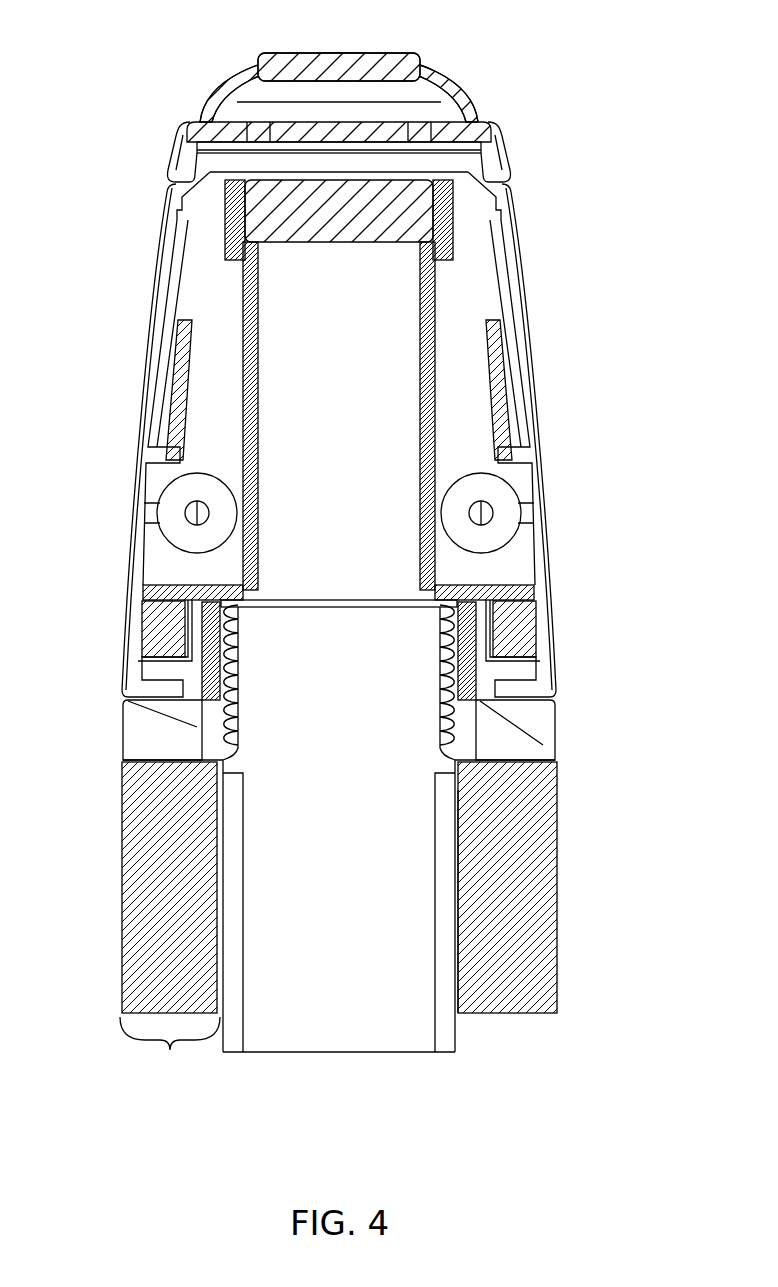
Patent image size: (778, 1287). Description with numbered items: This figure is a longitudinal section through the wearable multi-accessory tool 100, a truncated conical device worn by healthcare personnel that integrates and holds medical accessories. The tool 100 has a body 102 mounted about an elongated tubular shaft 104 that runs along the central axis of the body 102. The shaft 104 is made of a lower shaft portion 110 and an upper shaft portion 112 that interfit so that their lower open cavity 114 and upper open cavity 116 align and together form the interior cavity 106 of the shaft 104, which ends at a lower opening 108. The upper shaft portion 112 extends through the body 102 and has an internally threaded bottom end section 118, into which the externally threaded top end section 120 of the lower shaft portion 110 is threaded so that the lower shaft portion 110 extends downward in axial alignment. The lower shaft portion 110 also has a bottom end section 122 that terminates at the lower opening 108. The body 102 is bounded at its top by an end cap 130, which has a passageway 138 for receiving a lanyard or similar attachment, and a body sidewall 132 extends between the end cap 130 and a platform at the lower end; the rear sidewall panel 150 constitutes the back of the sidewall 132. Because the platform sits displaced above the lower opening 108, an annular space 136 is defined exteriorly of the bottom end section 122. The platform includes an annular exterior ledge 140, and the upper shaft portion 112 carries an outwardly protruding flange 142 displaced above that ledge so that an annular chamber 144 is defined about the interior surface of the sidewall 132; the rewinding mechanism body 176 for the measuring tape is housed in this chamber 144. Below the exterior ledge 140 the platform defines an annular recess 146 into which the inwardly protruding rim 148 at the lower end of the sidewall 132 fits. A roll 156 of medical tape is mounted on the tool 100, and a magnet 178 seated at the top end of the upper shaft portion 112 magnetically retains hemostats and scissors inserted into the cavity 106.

The wearable multi-accessory tool 100 is at (634, 72).
The body 102 is at (543, 317).
The elongated tubular shaft 104 is at (263, 586).
The cavity 106 is at (313, 1038).
The lower opening 108 is at (393, 1056).
The lower shaft portion 110 is at (557, 793).
The upper shaft portion 112 is at (438, 292).
The lower open cavity 114 is at (346, 885).
The upper open cavity 116 is at (343, 375).
The internally threaded bottom end section 118 is at (455, 650).
The externally threaded top end section 120 is at (438, 701).
The bottom end section 122 is at (447, 857).
The end cap 130 is at (457, 90).
The body sidewall 132 is at (137, 442).
The annular space 136 is at (170, 1058).
The passageway 138 is at (253, 88).
The exterior ledge 140 is at (143, 663).
The outwardly protruding flange 142 is at (166, 589).
The annular chamber 144 is at (526, 660).
The recess 146 is at (163, 691).
The inwardly protruding rim 148 is at (165, 701).
The rear sidewall panel 150 is at (544, 438).
The roll of medical tape 156 is at (125, 862).
The rewinding mechanism body 176 is at (548, 597).
The magnet 178 is at (367, 244).